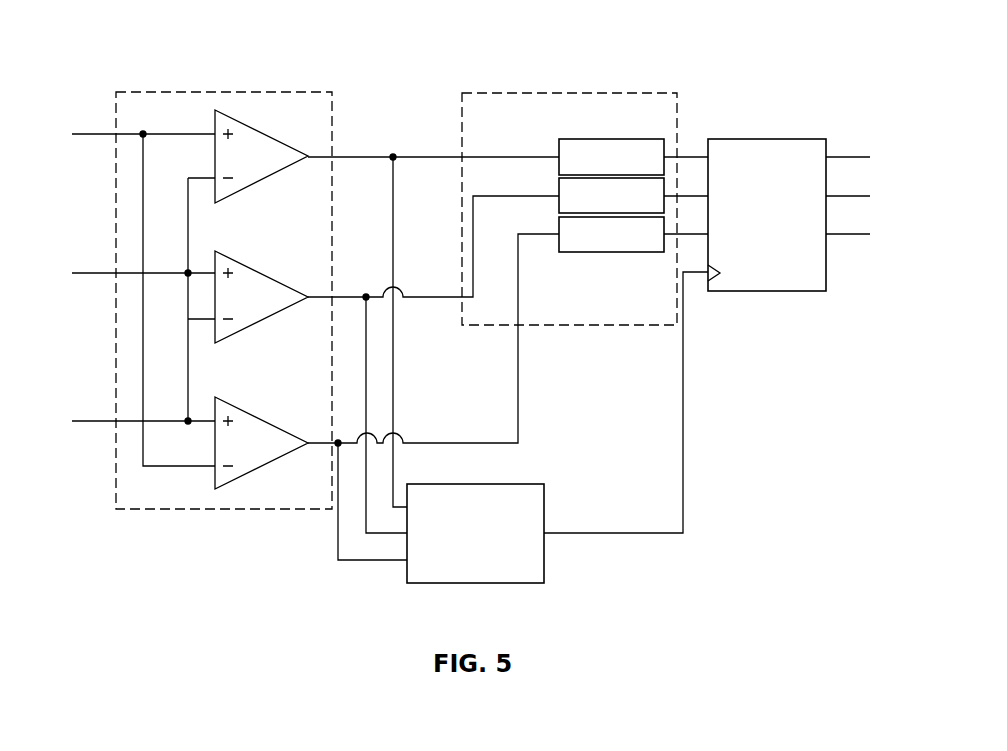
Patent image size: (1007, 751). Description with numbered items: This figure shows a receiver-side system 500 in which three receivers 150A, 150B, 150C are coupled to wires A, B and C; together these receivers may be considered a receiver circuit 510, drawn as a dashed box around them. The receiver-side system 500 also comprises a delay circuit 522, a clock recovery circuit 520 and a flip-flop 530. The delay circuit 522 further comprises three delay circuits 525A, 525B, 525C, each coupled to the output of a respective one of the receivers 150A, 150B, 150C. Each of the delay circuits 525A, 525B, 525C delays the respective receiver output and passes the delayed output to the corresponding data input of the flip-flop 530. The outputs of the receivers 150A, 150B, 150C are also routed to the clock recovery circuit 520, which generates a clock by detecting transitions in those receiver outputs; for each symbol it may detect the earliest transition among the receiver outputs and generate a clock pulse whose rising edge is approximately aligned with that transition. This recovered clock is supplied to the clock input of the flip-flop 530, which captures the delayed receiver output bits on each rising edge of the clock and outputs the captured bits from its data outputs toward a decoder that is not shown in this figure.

The receiver-side system 500 is at (124, 28).
The receiver circuit 510 is at (306, 92).
The receiver 150A is at (260, 130).
The receiver 150B is at (253, 268).
The receiver 150C is at (243, 410).
The delay circuit 522 is at (547, 93).
The delay circuit 525A is at (613, 139).
The delay circuit 525B is at (559, 193).
The delay circuit 525C is at (613, 253).
The flip-flop 530 is at (768, 139).
The clock recovery circuit 520 is at (473, 483).